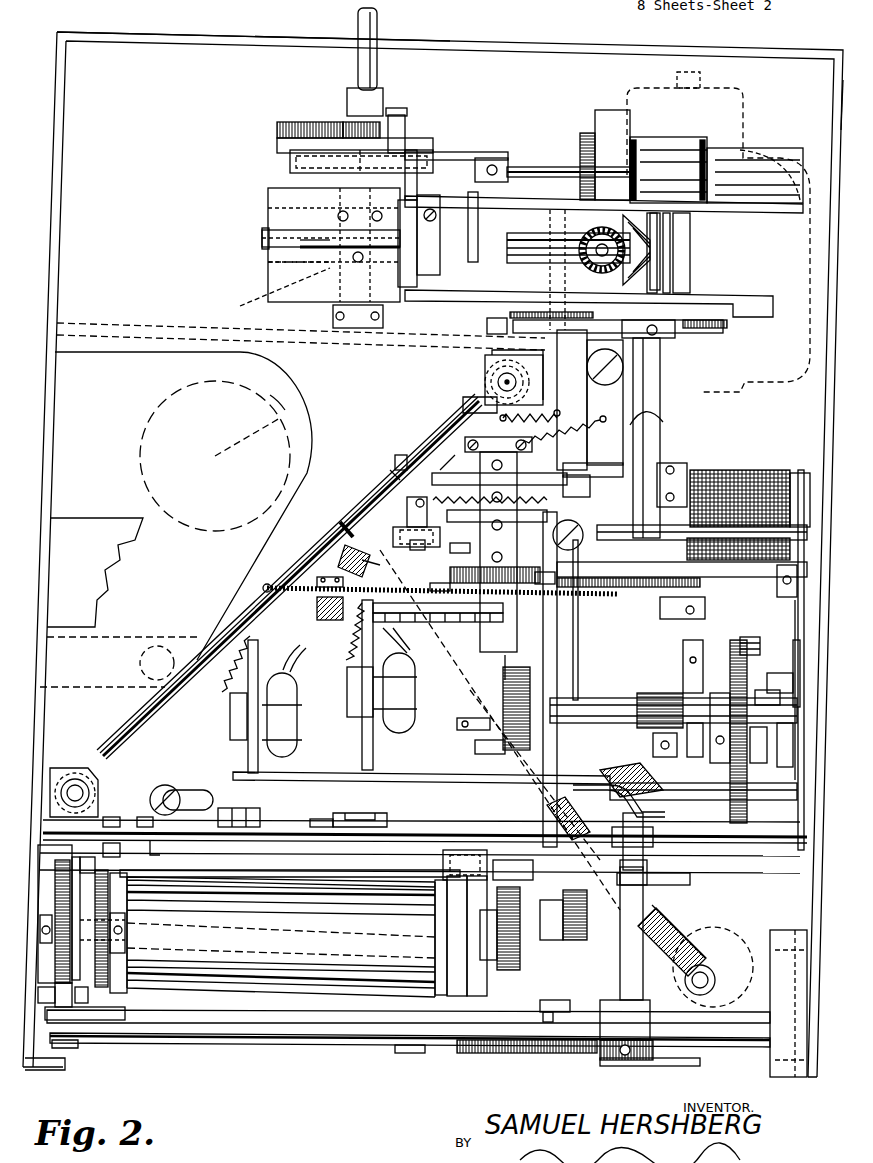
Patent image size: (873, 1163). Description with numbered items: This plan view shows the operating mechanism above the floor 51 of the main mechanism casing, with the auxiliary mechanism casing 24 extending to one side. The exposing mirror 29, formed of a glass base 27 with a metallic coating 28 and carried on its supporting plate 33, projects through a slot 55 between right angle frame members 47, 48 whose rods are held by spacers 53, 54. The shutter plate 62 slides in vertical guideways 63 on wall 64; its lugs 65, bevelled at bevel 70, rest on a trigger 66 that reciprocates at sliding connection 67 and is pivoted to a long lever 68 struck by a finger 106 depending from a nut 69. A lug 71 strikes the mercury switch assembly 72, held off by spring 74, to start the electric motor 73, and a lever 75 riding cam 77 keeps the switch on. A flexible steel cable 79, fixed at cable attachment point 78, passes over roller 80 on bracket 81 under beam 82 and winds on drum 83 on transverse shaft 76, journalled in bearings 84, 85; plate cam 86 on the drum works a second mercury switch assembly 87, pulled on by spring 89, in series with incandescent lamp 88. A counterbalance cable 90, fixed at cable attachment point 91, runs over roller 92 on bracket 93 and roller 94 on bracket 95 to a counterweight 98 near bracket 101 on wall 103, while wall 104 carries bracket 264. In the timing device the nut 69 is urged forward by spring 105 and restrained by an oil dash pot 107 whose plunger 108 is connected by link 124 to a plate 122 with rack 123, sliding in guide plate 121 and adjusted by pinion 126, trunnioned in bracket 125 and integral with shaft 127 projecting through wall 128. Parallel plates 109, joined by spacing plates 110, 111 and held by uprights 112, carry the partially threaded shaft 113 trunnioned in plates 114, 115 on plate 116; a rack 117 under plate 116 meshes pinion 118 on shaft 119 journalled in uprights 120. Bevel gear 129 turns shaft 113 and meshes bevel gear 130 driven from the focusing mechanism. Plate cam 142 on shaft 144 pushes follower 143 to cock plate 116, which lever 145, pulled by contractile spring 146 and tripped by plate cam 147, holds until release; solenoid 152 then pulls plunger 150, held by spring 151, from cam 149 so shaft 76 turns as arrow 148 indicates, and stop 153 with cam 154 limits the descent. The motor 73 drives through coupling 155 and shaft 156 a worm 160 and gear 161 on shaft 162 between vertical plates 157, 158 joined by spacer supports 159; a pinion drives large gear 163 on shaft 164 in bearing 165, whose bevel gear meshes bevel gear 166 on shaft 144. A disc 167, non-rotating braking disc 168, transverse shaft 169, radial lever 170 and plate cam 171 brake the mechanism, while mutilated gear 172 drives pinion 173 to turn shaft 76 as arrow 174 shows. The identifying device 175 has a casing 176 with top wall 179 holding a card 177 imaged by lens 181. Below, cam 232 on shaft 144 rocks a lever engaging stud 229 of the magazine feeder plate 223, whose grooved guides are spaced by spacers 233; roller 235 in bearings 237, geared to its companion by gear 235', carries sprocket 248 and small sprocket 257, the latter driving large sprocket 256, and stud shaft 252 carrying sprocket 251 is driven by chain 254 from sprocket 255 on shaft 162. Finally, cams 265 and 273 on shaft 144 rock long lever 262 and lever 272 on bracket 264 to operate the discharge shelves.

The base plate 24 is at (340, 1050).
The carriage rail end 27 is at (400, 470).
The carriage block 28 is at (468, 405).
The carriage rail 29 is at (150, 720).
The guide rail 33 is at (378, 482).
The bearing block 47 is at (485, 360).
The bearing block 48 is at (58, 765).
The frame 51 is at (112, 60).
The roller 53 is at (485, 385).
The roller 54 is at (95, 768).
The stop 55 is at (392, 470).
The cross plate 62 is at (140, 820).
The bracket 63 is at (112, 817).
The bracket 64 is at (160, 845).
The block 65 is at (345, 823).
The spring 66 is at (555, 416).
The screw 67 is at (168, 785).
The post 68 is at (578, 645).
The post 69 is at (473, 195).
The block 70 is at (322, 820).
The block 71 is at (258, 820).
The rod 72 is at (258, 760).
The housing outline 73 is at (770, 391).
The spring 74 is at (228, 704).
The plate 75 is at (342, 766).
The gear 76 is at (500, 713).
The bracket 77 is at (653, 839).
The rod 78 is at (285, 573).
The rack 79 is at (450, 576).
The block 80 is at (325, 575).
The block 81 is at (317, 606).
The cam 82 is at (90, 540).
The block 83 is at (430, 586).
The bracket 84 is at (478, 452).
The block 85 is at (457, 726).
The bar 86 is at (450, 625).
The key lever 87 is at (373, 745).
The disc 88 is at (290, 408).
The contact springs 89 is at (345, 660).
The rod 90 is at (655, 915).
The pawl 91 is at (342, 520).
The pawl 92 is at (372, 559).
The pawl 93 is at (345, 552).
The wheel 94 is at (725, 934).
The roller 95 is at (695, 994).
The cylinder 98 is at (692, 930).
The block 101 is at (785, 950).
The frame wall 103 is at (838, 105).
The block 104 is at (600, 1060).
The plate 105 is at (450, 152).
The shaft 106 is at (495, 265).
The motor 107 is at (790, 165).
The motor shaft 108 is at (535, 165).
The plate 109 is at (740, 215).
The block 110 is at (405, 275).
The bar 111 is at (690, 283).
The plate 112 is at (765, 318).
The bar 113 is at (305, 242).
The block 114 is at (425, 290).
The bar 115 is at (690, 271).
The block 116 is at (280, 262).
The shaft 117 is at (262, 236).
The hidden member 118 is at (270, 292).
The guide line 119 is at (360, 338).
The bearing block 120 is at (268, 202).
The plate 121 is at (290, 165).
The block 122 is at (277, 143).
The gear 123 is at (280, 122).
The bar 124 is at (415, 190).
The block 125 is at (405, 150).
The gear 126 is at (340, 122).
The shaft 127 is at (358, 68).
The frame edge 128 is at (278, 42).
The bevel gear 129 is at (655, 248).
The gear 130 is at (590, 232).
The collar 142 is at (690, 330).
The block 143 is at (487, 325).
The shaft 144 is at (662, 358).
The block 145 is at (590, 484).
The plate 146 is at (570, 463).
The stop 147 is at (398, 455).
The block 148 is at (480, 754).
The bar 149 is at (472, 522).
The block 150 is at (657, 505).
The spring 151 is at (438, 502).
The gear 152 is at (770, 470).
The block 153 is at (420, 550).
The block 154 is at (460, 553).
The gear 155 is at (740, 470).
The block 156 is at (688, 690).
The post 157 is at (560, 673).
The bar 158 is at (805, 620).
The shaft 159 is at (590, 543).
The worm 160 is at (680, 695).
The link 161 is at (665, 813).
The shaft 162 is at (672, 712).
The block 163 is at (752, 646).
The gear 164 is at (742, 770).
The block 165 is at (677, 765).
The bevel gear 166 is at (606, 772).
The block 167 is at (690, 619).
The bar 168 is at (695, 580).
The screw 169 is at (575, 550).
The block 170 is at (790, 673).
The block 171 is at (785, 703).
The rack 172 is at (715, 590).
The block 173 is at (545, 574).
The shaft 174 is at (505, 663).
The guide 175 is at (272, 393).
The cam surface 176 is at (262, 383).
The hidden line 177 is at (150, 632).
The plate edge 179 is at (135, 370).
The hole 181 is at (140, 664).
The rail 223 is at (222, 866).
The rail 229 is at (245, 866).
The bar 232 is at (650, 883).
The block 233 is at (112, 849).
The drum 235 is at (307, 945).
The drum gear 235' is at (125, 973).
The bracket 237 is at (110, 1020).
The gear 248 is at (495, 980).
The gear 251 is at (572, 945).
The block 252 is at (567, 1003).
The roller 254 is at (500, 820).
The hidden line 255 is at (497, 707).
The gear 256 is at (60, 880).
The bracket 257 is at (85, 1080).
The end plate 262 is at (200, 998).
The rack 264 is at (470, 1053).
The block 265 is at (548, 1012).
The plate 272 is at (262, 1047).
The plate 273 is at (700, 1066).